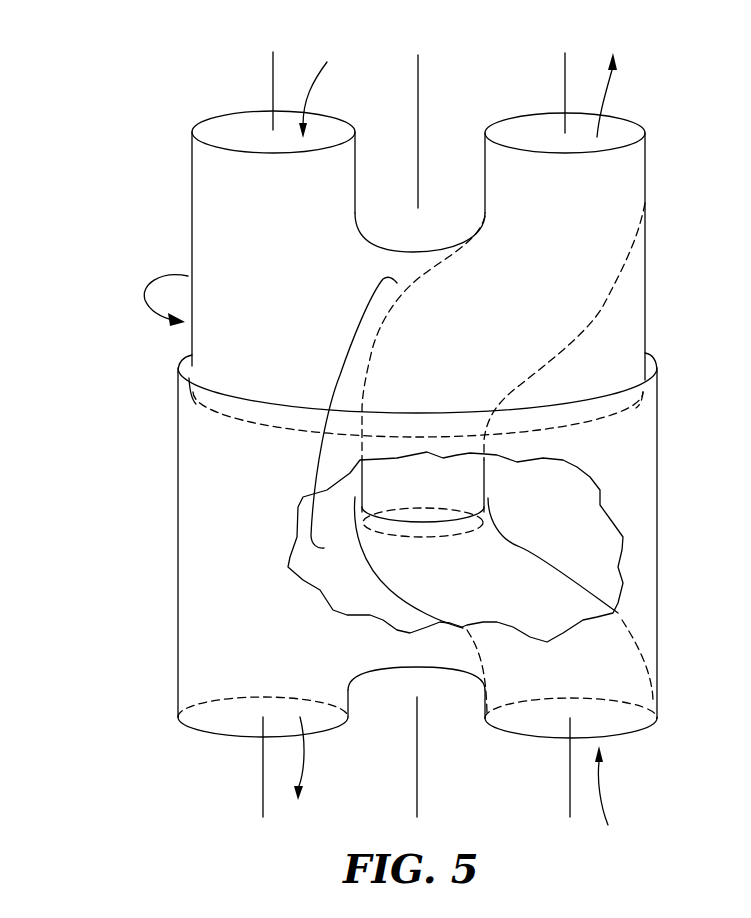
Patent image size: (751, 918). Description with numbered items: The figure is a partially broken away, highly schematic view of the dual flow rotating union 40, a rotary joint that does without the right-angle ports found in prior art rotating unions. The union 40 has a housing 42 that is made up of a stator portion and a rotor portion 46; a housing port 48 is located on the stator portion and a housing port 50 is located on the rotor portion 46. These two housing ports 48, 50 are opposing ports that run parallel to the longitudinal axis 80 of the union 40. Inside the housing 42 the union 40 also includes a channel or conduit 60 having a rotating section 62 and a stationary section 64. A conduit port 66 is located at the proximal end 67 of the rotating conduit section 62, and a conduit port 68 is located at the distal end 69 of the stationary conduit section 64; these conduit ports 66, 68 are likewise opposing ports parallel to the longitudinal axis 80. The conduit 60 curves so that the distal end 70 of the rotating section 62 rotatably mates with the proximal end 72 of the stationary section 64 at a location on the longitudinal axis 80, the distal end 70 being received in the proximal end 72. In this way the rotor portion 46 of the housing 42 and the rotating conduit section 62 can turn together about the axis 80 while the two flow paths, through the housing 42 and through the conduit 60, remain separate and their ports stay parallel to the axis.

The dual flow rotating union 40 is at (712, 72).
The housing 42 is at (676, 196).
The rotor portion 46 is at (205, 231).
The housing port 48 is at (229, 737).
The housing port 50 is at (248, 124).
The conduit 60 is at (335, 404).
The rotating conduit section 62 is at (603, 308).
The stationary conduit section 64 is at (517, 568).
The conduit port 66 is at (620, 133).
The proximal end 67 is at (490, 173).
The conduit port 68 is at (617, 740).
The distal end 69 is at (482, 698).
The distal end 70 is at (452, 486).
The proximal end 72 is at (407, 560).
The longitudinal axis 80 is at (420, 88).